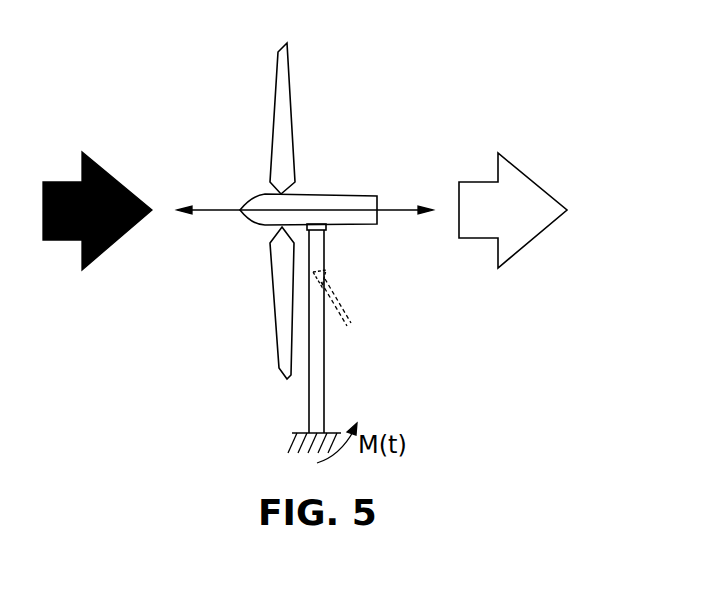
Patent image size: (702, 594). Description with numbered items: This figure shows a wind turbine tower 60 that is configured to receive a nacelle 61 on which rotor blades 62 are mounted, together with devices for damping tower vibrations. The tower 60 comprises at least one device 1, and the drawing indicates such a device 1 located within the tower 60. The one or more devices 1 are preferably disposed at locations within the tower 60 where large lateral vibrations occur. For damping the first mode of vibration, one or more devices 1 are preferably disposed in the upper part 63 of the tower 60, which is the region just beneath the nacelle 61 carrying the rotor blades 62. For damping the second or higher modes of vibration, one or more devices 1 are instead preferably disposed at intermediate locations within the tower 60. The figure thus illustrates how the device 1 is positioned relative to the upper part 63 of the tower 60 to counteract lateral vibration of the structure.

The wind turbine tower 60 is at (324, 248).
The nacelle 61 is at (360, 203).
The rotor blades 62 is at (279, 120).
The upper part 63 is at (340, 261).
The device 1 is at (336, 309).